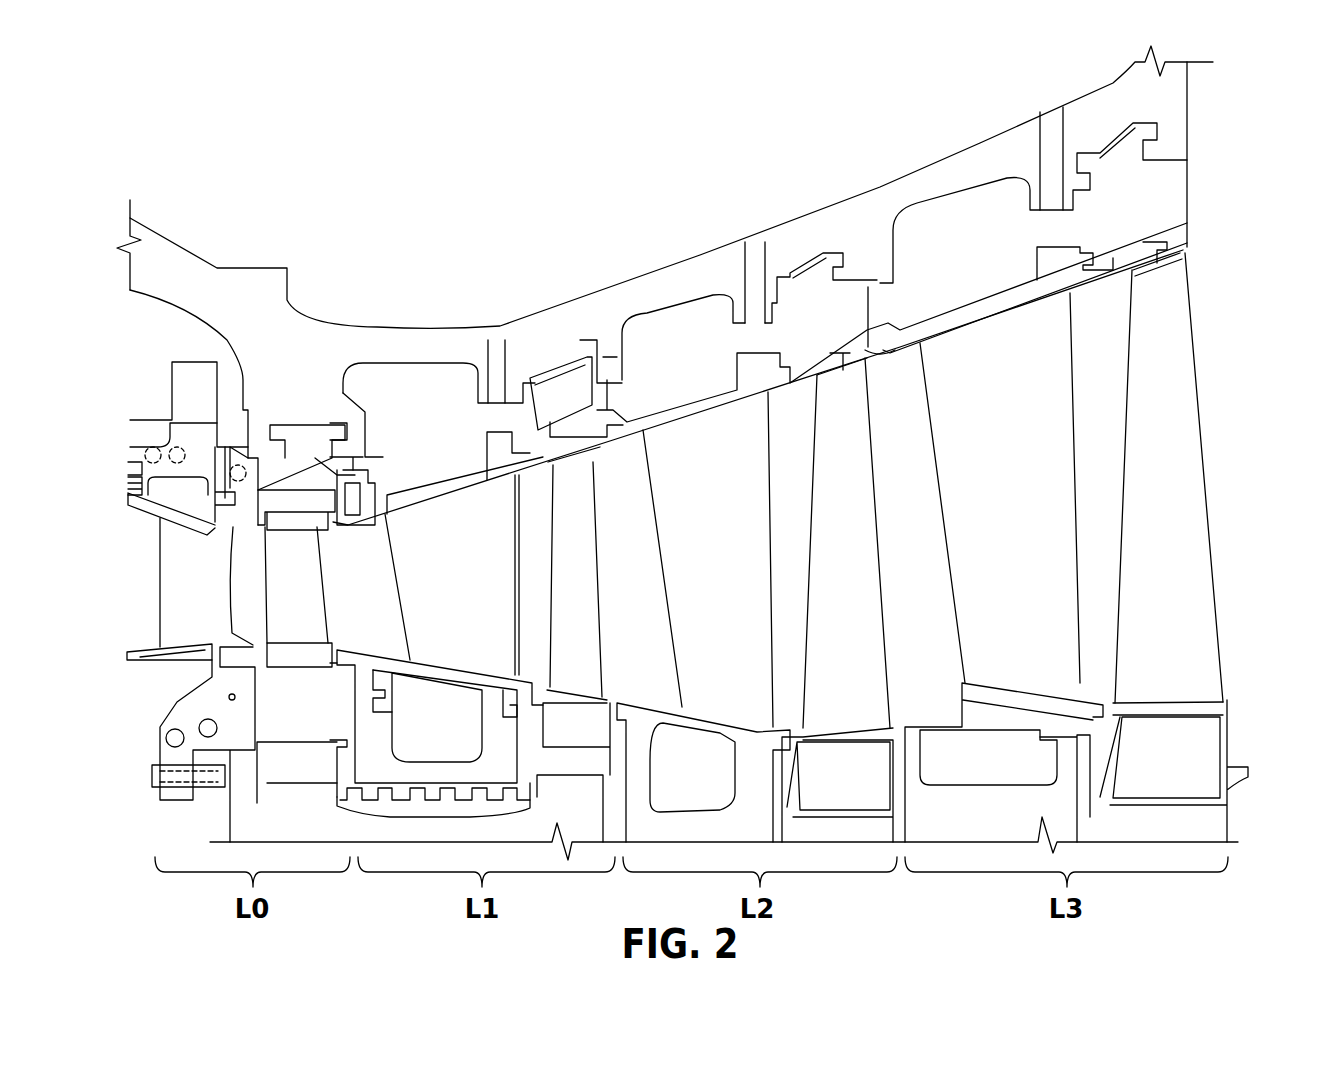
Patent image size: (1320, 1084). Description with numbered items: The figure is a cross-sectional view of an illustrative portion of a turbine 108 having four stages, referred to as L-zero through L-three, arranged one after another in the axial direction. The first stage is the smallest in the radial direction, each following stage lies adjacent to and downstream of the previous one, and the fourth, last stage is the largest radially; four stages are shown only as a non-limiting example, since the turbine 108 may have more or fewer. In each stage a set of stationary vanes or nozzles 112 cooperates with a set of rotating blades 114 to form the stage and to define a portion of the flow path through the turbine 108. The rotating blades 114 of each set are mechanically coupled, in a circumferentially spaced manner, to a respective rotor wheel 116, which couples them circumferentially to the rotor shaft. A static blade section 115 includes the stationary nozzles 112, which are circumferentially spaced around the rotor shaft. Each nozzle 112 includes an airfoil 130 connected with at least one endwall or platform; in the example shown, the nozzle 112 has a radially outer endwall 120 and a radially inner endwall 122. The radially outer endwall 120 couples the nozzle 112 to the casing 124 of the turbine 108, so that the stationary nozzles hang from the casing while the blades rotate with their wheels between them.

The turbine 108 is at (405, 300).
The stationary vanes or nozzles 112 is at (170, 599).
The rotating blades 114 is at (271, 605).
The static blade section 115 is at (680, 388).
The rotor wheel 116 is at (312, 777).
The radially outer endwall 120 is at (453, 497).
The radially inner endwall 122 is at (493, 672).
The casing 124 is at (467, 343).
The airfoil 130 is at (423, 595).